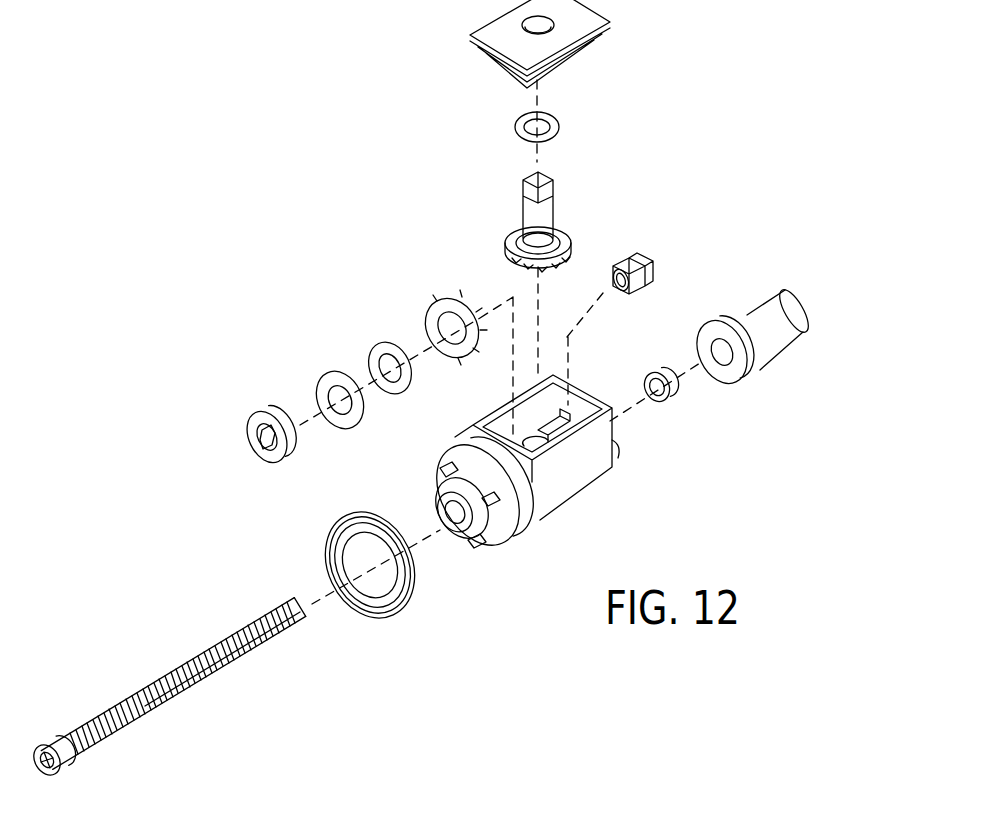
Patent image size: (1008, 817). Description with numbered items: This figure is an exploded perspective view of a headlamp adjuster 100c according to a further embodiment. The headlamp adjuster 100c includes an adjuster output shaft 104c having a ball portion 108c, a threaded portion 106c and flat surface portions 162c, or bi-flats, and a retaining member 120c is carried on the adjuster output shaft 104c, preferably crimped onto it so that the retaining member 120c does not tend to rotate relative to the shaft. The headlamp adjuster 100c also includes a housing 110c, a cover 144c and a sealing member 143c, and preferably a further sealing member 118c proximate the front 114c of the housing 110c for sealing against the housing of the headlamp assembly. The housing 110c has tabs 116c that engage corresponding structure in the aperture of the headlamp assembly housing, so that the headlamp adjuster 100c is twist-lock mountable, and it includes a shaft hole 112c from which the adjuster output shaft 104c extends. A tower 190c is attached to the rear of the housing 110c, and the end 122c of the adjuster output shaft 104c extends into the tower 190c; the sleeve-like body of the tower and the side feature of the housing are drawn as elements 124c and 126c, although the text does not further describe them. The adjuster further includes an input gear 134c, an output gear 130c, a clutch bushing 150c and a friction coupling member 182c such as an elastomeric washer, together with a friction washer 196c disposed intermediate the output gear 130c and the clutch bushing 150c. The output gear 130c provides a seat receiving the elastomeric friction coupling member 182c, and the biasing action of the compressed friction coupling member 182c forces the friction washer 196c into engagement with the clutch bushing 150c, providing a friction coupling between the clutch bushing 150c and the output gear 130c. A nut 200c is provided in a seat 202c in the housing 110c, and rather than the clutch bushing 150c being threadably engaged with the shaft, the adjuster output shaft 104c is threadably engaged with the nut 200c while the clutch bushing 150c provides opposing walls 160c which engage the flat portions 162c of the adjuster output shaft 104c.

The headlamp adjuster 100c is at (258, 315).
The adjuster output shaft 104c is at (194, 669).
The threaded portion 106c is at (228, 630).
The ball portion 108c is at (50, 745).
The housing 110c is at (563, 477).
The shaft hole 112c is at (445, 535).
The front 114c is at (490, 530).
The tabs 116c is at (446, 466).
The sealing member 118c is at (367, 498).
The retaining member 120c is at (660, 372).
The end 122c is at (303, 612).
The sleeve 124c is at (800, 300).
The boss 126c is at (620, 452).
The output gear 130c is at (446, 296).
The input gear 134c is at (578, 235).
The sealing member 143c is at (572, 125).
The cover 144c is at (615, 22).
The clutch bushing 150c is at (223, 438).
The opposing walls 160c is at (262, 432).
The flat surface portions 162c is at (208, 678).
The friction coupling member 182c is at (380, 338).
The tower 190c is at (771, 328).
The friction washer 196c is at (322, 368).
The nut 200c is at (650, 262).
The seat 202c is at (566, 425).